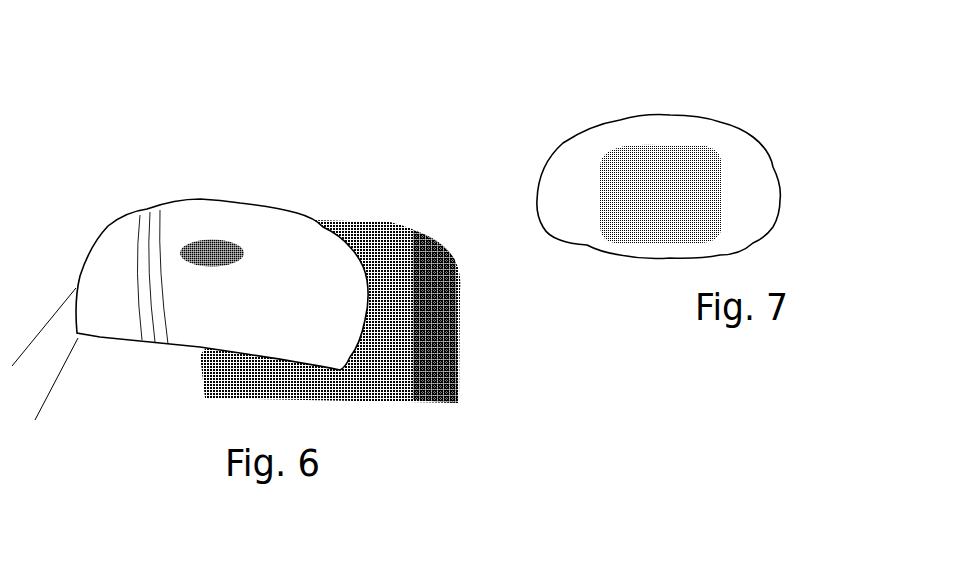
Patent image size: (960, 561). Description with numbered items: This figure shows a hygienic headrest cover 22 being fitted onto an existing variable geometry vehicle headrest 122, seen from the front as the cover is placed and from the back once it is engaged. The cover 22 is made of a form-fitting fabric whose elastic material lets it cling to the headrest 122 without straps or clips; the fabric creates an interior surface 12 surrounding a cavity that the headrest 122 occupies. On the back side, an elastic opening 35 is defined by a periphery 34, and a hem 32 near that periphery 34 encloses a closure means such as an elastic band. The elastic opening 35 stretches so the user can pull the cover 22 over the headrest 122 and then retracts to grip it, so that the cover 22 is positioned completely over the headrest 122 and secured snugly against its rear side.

In FIG. 7, the interior surface 12 is at (680, 187).
In FIG. 6, the headrest cover 22 is at (213, 212).
In FIG. 7, the headrest cover 22 is at (740, 211).
In FIG. 6, the headrest 122 is at (392, 277).
In FIG. 7, the hem 32 is at (688, 137).
In FIG. 7, the opening periphery 34 is at (648, 150).
In FIG. 7, the elastic opening 35 is at (653, 207).